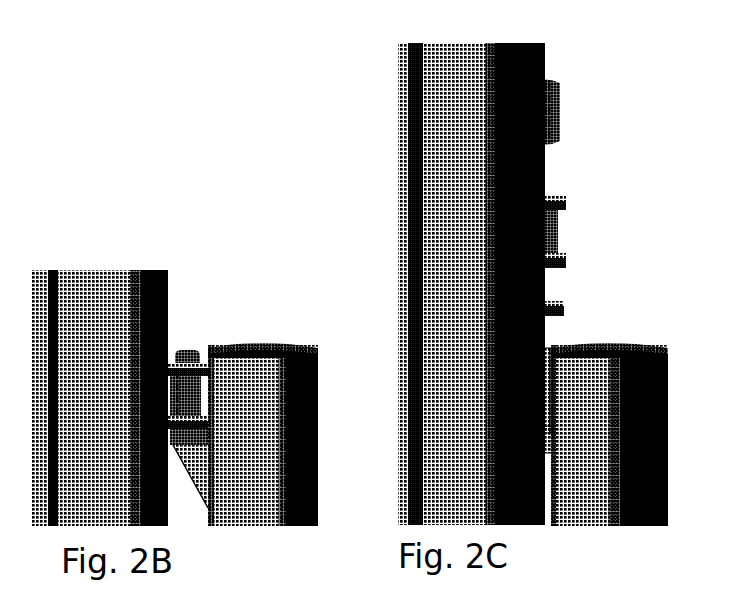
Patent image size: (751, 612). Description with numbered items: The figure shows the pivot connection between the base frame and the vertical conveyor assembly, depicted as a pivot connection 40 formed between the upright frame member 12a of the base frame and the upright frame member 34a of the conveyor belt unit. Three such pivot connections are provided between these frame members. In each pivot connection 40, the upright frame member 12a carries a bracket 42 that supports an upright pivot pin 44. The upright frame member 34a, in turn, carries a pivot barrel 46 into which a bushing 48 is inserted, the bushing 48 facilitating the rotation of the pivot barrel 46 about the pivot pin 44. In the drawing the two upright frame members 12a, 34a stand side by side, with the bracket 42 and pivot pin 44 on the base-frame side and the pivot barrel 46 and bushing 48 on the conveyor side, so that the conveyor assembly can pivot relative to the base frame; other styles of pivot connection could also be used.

In FIG. 2B, the upright frame member 12a is at (253, 362).
In FIG. 2C, the upright frame member 12a is at (603, 347).
In FIG. 2B, the upright frame member 34a is at (102, 278).
In FIG. 2C, the upright frame member 34a is at (440, 130).
In FIG. 2B, the pivot connection 40 is at (200, 298).
In FIG. 2B, the bracket 42 is at (190, 465).
In FIG. 2C, the bracket 42 is at (532, 445).
In FIG. 2C, the pivot pin 44 is at (543, 385).
In FIG. 2C, the pivot barrel 46 is at (552, 227).
In FIG. 2C, the bushing 48 is at (550, 123).